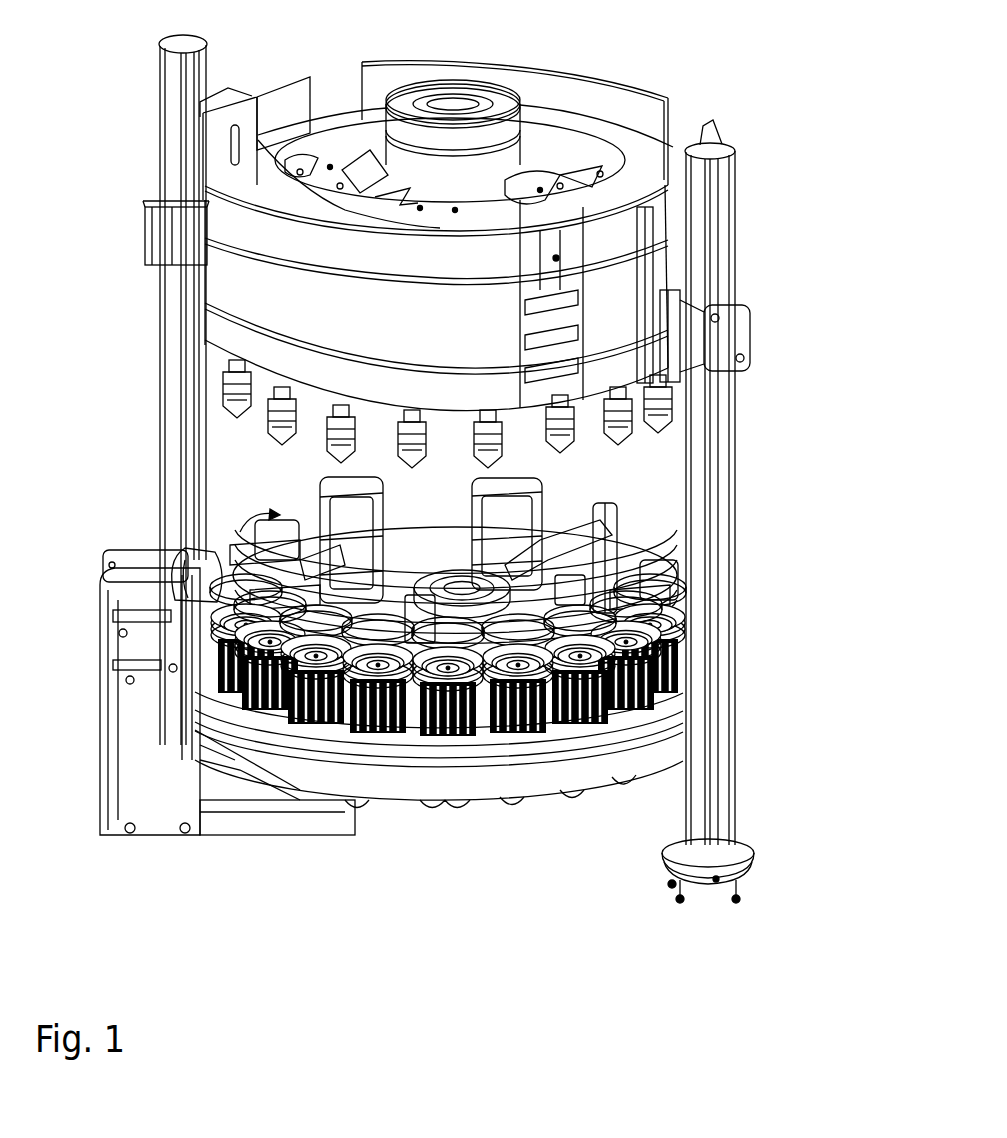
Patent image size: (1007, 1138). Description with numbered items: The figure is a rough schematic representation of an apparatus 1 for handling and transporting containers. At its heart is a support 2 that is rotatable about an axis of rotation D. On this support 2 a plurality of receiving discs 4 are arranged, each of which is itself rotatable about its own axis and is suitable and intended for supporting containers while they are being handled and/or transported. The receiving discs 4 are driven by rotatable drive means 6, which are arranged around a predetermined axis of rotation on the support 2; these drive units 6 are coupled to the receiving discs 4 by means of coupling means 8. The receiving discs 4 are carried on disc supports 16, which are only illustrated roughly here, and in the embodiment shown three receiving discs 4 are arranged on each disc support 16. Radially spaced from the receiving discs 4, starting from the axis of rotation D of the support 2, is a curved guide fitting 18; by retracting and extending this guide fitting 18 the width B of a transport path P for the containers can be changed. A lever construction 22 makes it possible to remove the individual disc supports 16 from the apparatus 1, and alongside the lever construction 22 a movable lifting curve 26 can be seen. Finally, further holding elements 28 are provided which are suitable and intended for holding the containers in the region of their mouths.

The apparatus 1 is at (440, 466).
The support 2 is at (515, 700).
The receiving discs 4 is at (448, 748).
The drive means 6 is at (545, 700).
The coupling means 8 is at (487, 700).
The disc supports 16 is at (420, 690).
The guide fitting 18 is at (200, 655).
The lever construction 22 is at (683, 697).
The movable lifting curve 26 is at (722, 768).
The further holding elements 28 is at (640, 433).
The width of transport path B is at (177, 563).
The axis of rotation D is at (690, 597).
The transport path P is at (243, 512).